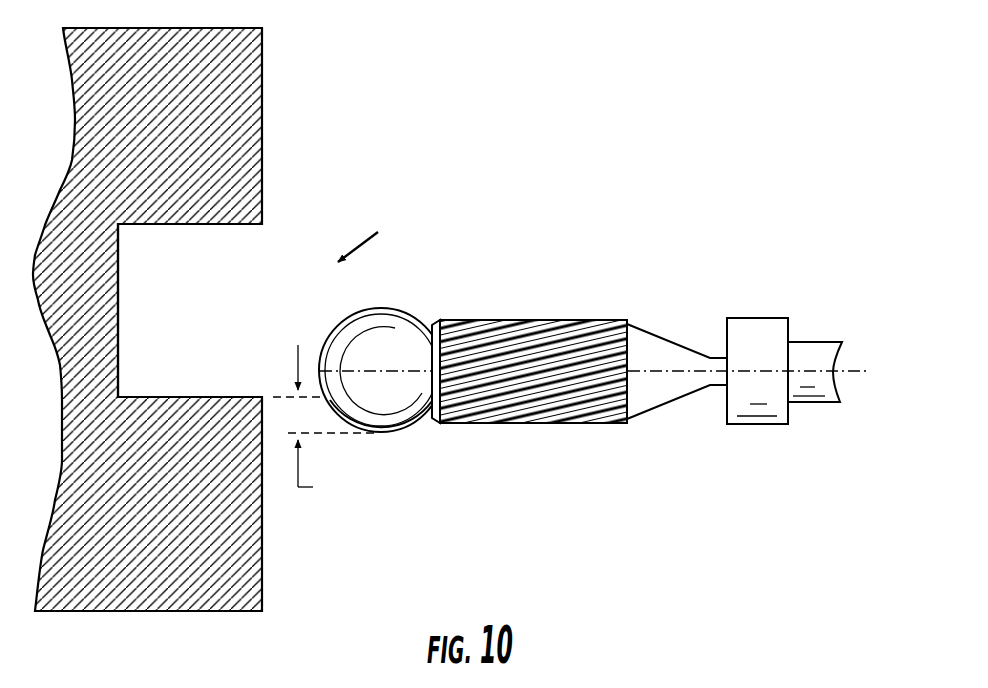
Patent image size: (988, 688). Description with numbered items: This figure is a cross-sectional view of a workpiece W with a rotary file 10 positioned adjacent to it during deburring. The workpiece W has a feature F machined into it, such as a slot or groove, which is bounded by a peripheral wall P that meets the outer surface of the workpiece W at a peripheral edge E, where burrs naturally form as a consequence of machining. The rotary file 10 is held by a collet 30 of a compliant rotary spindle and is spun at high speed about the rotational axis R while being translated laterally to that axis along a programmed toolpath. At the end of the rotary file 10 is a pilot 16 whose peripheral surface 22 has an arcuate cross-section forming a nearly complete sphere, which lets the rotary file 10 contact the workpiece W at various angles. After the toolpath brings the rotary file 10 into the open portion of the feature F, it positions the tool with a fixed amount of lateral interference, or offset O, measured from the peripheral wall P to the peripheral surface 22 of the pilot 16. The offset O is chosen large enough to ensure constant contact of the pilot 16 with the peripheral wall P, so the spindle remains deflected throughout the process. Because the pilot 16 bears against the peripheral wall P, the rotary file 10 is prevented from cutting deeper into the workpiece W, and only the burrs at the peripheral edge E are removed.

The rotary file 10 is at (585, 302).
The pilot 16 is at (385, 309).
The peripheral surface 22 is at (387, 447).
The collet 30 is at (762, 325).
The workpiece W is at (262, 82).
The peripheral edge E is at (262, 225).
The peripheral wall P is at (200, 233).
The feature F is at (365, 236).
The offset O is at (325, 422).
The rotational axis R is at (862, 371).